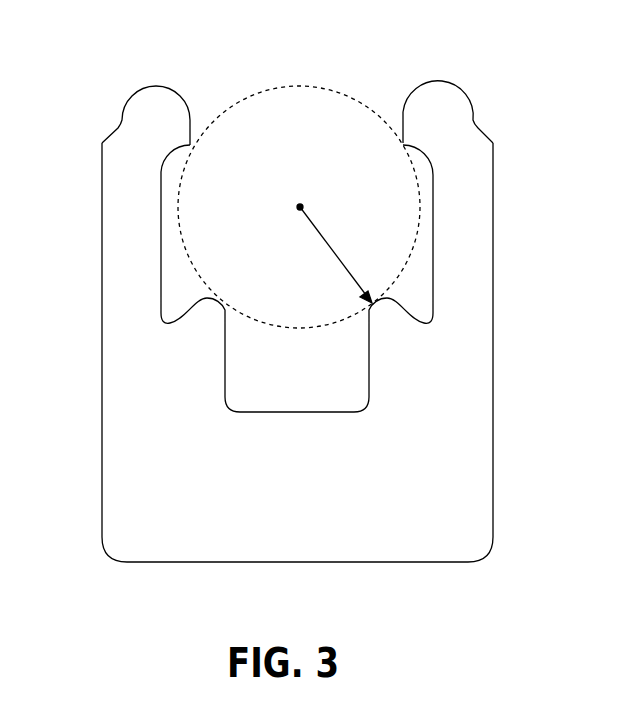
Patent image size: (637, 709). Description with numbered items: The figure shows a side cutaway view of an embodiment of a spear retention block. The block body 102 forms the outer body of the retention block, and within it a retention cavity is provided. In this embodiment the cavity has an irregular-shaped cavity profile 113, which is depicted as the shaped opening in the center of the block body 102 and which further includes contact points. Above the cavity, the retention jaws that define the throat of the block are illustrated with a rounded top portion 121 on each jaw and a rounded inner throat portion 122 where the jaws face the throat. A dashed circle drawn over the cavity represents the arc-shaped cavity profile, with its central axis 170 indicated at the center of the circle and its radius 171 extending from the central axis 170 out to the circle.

The block body 102 is at (206, 533).
The irregular-shaped cavity profile 113 is at (352, 412).
The rounded top portion 121 is at (437, 88).
The rounded inner throat portion 122 is at (195, 120).
The central axis 170 is at (338, 255).
The radius 171 is at (300, 207).